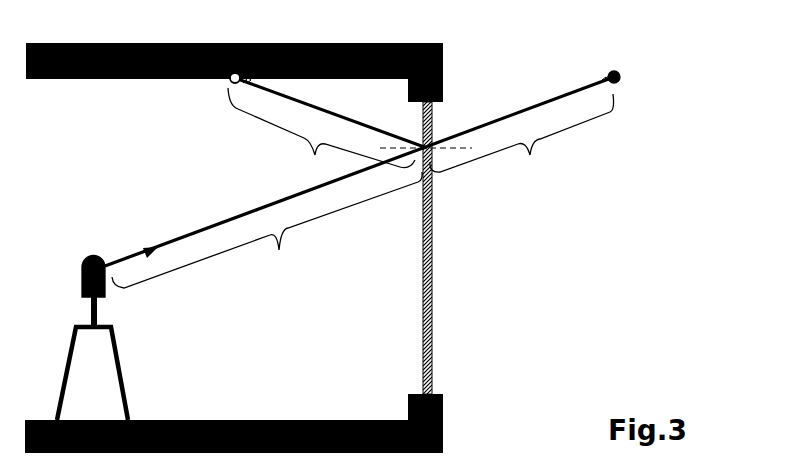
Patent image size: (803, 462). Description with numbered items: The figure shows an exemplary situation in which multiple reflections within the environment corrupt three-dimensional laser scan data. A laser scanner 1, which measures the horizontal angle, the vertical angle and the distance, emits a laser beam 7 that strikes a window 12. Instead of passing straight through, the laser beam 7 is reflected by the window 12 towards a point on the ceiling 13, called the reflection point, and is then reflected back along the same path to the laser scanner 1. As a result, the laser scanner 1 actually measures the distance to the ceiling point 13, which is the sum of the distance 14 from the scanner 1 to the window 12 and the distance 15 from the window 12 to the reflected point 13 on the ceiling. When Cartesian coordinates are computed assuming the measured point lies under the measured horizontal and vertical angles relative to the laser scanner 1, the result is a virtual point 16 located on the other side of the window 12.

The laser scanner 1 is at (139, 338).
The laser beam 7 is at (325, 171).
The window 12 is at (482, 247).
The ceiling point 13 is at (258, 110).
The distance from scanner to window 14 is at (267, 230).
The distance from window to reflected point 15 is at (421, 142).
The virtual point 16 is at (674, 46).